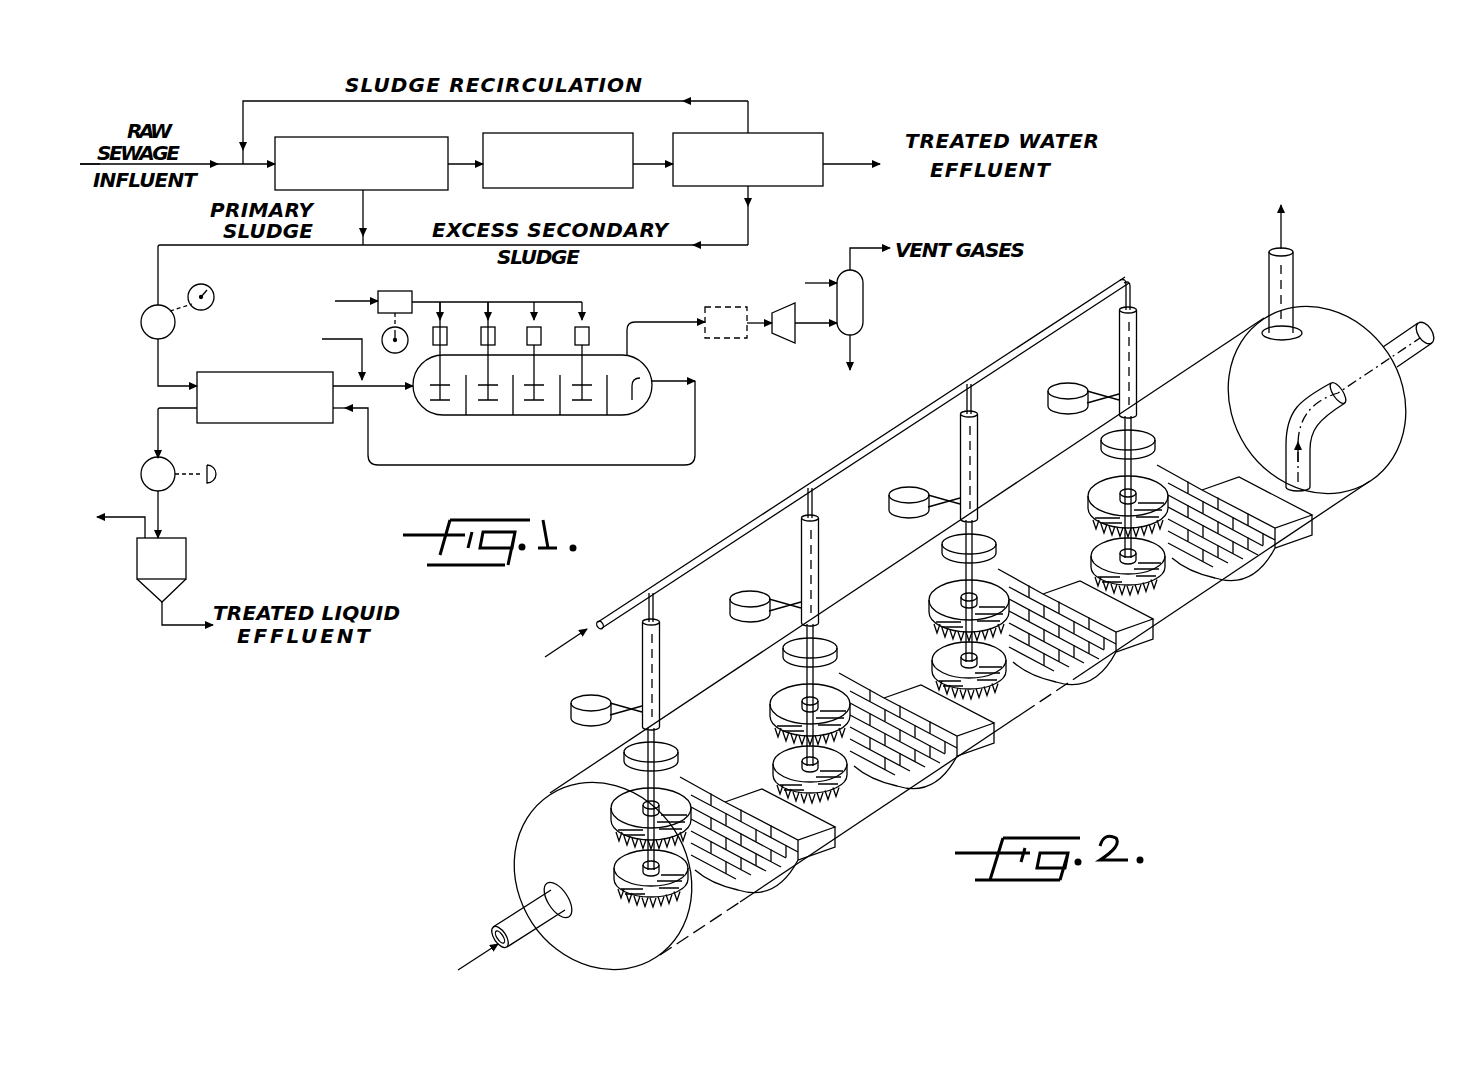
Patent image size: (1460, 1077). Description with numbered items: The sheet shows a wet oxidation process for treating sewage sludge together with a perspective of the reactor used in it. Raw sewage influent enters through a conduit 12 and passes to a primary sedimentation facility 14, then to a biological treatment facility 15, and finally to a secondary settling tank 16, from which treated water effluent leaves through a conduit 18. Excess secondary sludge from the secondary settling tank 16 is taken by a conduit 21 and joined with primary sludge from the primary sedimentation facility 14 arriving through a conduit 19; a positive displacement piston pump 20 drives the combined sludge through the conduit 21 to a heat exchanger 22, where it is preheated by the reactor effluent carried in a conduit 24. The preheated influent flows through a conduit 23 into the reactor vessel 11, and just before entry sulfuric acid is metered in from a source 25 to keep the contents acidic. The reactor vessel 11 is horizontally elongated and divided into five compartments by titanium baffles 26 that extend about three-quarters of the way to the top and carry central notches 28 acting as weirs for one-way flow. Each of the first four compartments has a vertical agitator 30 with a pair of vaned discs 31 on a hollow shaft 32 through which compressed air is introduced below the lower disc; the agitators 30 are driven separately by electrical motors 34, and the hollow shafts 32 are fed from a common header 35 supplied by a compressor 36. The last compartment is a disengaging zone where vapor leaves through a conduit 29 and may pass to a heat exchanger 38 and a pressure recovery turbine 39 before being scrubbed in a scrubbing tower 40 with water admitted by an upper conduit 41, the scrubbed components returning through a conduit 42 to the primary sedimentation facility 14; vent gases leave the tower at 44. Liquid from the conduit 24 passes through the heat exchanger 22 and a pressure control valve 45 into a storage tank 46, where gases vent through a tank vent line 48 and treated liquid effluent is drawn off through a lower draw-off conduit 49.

In FIG. 1, the reactor vessel 11 is at (497, 418).
In FIG. 2, the reactor vessel 11 is at (1028, 716).
In FIG. 1, the conduit 12 is at (204, 163).
In FIG. 1, the primary sedimentation facility 14 is at (335, 137).
In FIG. 1, the biological treatment facility 15 is at (510, 133).
In FIG. 1, the secondary settling tank 16 is at (697, 133).
In FIG. 1, the conduit 18 is at (868, 160).
In FIG. 1, the conduit 19 is at (365, 218).
In FIG. 1, the positive displacement piston pump 20 is at (282, 100).
In FIG. 1, the conduit 21 is at (163, 247).
In FIG. 1, the heat exchanger 22 is at (247, 372).
In FIG. 1, the conduit 23 is at (390, 396).
In FIG. 2, the conduit 23 is at (510, 915).
In FIG. 1, the conduit 24 is at (700, 440).
In FIG. 2, the conduit 24 is at (1399, 332).
In FIG. 1, the sulfuric acid source 25 is at (322, 339).
In FIG. 1, the baffles 26 is at (460, 413).
In FIG. 2, the baffles 26 is at (781, 862).
In FIG. 2, the central notches 28 is at (731, 777).
In FIG. 1, the conduit 29 is at (655, 325).
In FIG. 2, the conduit 29 is at (1293, 273).
In FIG. 1, the vertical agitator 30 is at (488, 370).
In FIG. 2, the vertical agitator 30 is at (660, 672).
In FIG. 1, the discs 31 is at (438, 398).
In FIG. 2, the discs 31 is at (625, 860).
In FIG. 1, the hollow shaft 32 is at (488, 313).
In FIG. 2, the hollow shaft 32 is at (647, 603).
In FIG. 1, the electrical motors 34 is at (582, 326).
In FIG. 2, the electrical motors 34 is at (571, 712).
In FIG. 1, the common header 35 is at (557, 300).
In FIG. 2, the common header 35 is at (716, 546).
In FIG. 1, the compressor 36 is at (395, 291).
In FIG. 1, the heat exchanger 38 is at (725, 307).
In FIG. 1, the pressure recovery turbine 39 is at (782, 303).
In FIG. 1, the scrubbing tower 40 is at (863, 296).
In FIG. 1, the upper conduit 41 is at (812, 283).
In FIG. 1, the conduit 42 is at (858, 350).
In FIG. 1, the vent gas line 44 is at (862, 248).
In FIG. 1, the pressure control valve 45 is at (143, 465).
In FIG. 1, the storage tank 46 is at (137, 562).
In FIG. 1, the tank vent line 48 is at (145, 502).
In FIG. 1, the lower draw-off conduit 49 is at (172, 630).